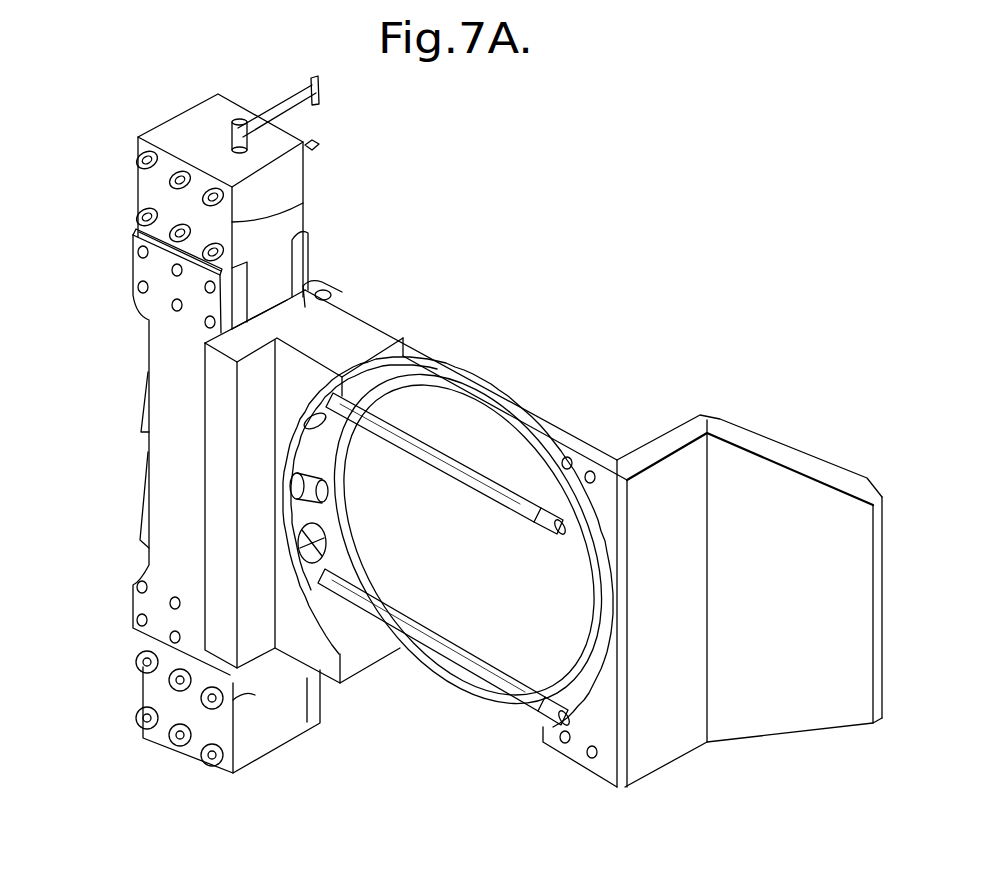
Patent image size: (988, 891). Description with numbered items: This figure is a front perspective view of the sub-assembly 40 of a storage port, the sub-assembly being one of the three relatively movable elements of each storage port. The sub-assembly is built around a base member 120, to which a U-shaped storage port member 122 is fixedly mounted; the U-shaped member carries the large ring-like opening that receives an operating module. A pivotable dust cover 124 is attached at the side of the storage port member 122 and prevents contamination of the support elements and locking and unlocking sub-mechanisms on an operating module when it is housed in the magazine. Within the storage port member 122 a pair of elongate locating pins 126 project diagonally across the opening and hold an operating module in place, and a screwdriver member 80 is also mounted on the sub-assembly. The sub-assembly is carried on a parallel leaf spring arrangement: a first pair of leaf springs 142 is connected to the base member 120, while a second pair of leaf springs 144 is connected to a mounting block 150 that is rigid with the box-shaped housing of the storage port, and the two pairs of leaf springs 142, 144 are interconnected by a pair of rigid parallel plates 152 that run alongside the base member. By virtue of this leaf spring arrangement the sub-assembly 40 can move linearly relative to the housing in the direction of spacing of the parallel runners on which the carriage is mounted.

The optical mount assembly 40 is at (77, 106).
The screwdriver member 80 is at (330, 490).
The base member 120 is at (274, 187).
The U-shaped storage port member 122 is at (347, 332).
The pivotable dust cover 124 is at (790, 457).
The elongate locating pins 126 is at (549, 532).
The first pair of leaf springs 142 is at (303, 196).
The second pair of leaf springs 144 is at (296, 700).
The mounting block 150 is at (205, 752).
The rigid parallel plates 152 is at (303, 253).